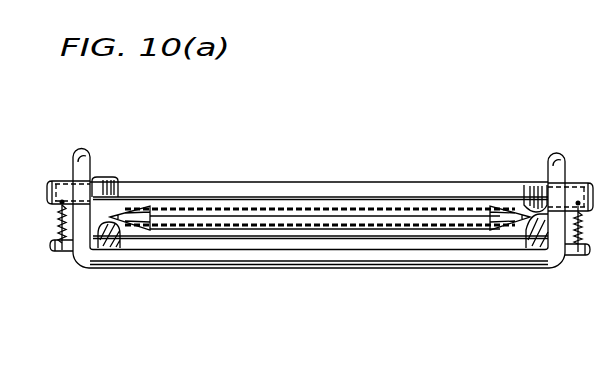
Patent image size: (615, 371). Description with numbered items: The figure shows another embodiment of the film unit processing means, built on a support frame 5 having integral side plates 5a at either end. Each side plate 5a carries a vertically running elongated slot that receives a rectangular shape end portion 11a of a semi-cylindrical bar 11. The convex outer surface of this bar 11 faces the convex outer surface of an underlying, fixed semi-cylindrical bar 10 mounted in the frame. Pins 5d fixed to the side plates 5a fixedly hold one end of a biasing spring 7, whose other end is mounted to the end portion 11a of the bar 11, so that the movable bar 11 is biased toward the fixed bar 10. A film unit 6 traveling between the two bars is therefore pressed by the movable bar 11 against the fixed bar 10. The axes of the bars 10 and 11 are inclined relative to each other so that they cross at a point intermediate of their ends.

The support frame 5 is at (169, 277).
The side plate 5a is at (80, 151).
The pin 5d is at (54, 252).
The film unit 6 is at (364, 210).
The biasing spring 7 is at (57, 215).
The fixed semi-cylindrical bar 10 is at (317, 247).
The semi-cylindrical bar 11 is at (257, 193).
The rectangular shape end portion 11a is at (97, 186).